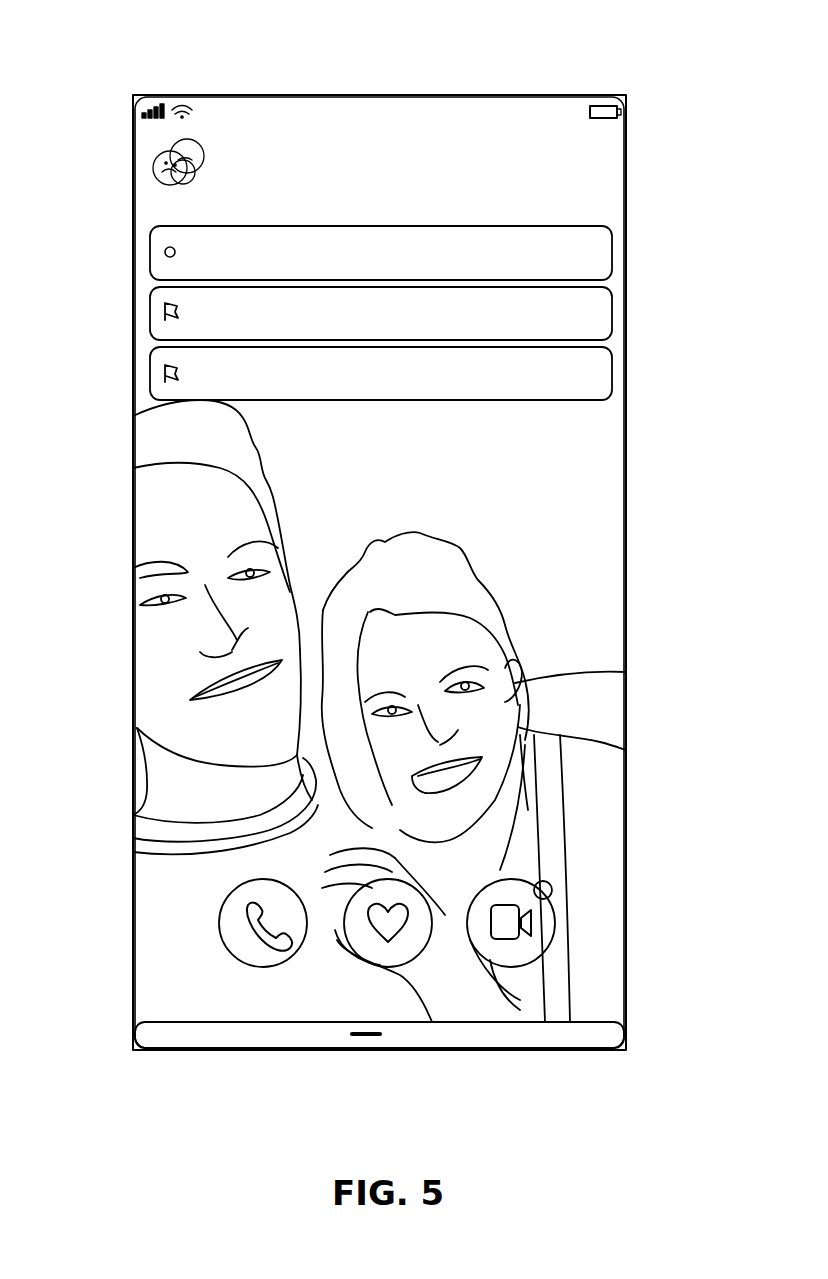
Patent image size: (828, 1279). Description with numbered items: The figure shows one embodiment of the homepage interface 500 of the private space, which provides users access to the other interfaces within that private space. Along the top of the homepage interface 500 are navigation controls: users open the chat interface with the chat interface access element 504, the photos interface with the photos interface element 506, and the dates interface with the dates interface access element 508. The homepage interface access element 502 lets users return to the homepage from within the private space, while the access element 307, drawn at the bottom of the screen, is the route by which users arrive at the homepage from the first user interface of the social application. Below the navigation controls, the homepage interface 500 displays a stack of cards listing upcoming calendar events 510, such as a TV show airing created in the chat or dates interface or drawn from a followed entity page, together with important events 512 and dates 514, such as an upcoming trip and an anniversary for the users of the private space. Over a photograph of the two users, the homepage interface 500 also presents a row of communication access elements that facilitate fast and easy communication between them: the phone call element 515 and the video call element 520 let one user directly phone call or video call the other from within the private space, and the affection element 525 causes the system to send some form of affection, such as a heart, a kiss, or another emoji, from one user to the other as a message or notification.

The homepage interface 500 is at (115, 45).
The homepage interface access element 502 is at (160, 165).
The chat interface access element 504 is at (276, 138).
The photos interface element 506 is at (424, 150).
The dates interface access element 508 is at (503, 138).
The upcoming calendar events 510 is at (594, 263).
The important events 512 is at (594, 317).
The dates 514 is at (594, 372).
The phone call element 515 is at (240, 921).
The video call element 520 is at (534, 923).
The affection element 525 is at (410, 932).
The access element 307 is at (165, 1033).